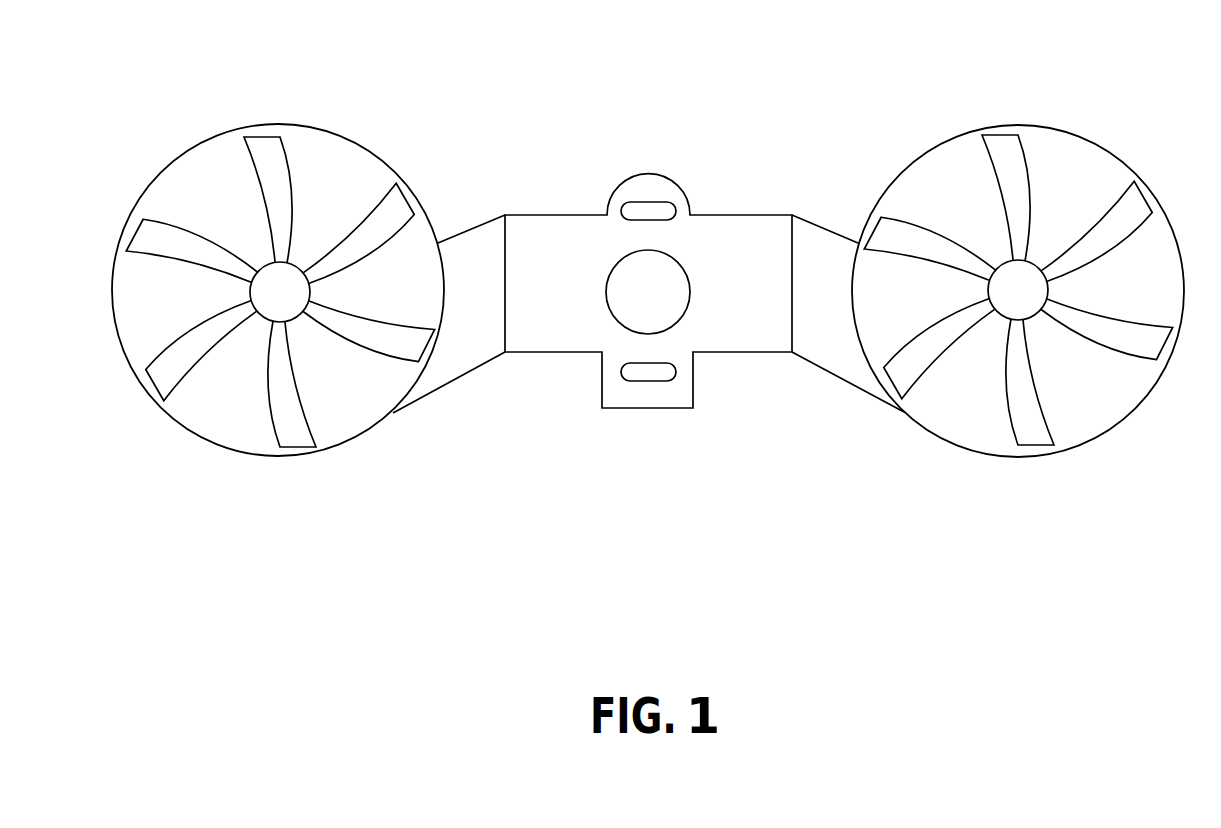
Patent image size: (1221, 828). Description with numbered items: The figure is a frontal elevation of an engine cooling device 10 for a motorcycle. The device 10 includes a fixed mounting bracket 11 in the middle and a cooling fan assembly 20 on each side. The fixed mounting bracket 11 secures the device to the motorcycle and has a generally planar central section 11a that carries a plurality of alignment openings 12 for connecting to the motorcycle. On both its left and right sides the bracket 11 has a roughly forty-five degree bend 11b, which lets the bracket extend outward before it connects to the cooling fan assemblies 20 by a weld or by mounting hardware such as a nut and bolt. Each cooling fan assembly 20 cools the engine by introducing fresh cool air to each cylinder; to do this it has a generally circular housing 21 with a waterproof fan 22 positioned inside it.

The engine cooling device 10 is at (683, 62).
The fixed mounting bracket 11 is at (650, 145).
The central section 11a is at (749, 279).
The bend 11b is at (494, 307).
The alignment openings 12 is at (661, 302).
The cooling fan assembly 20 is at (392, 433).
The housing 21 is at (215, 138).
The waterproof fan 22 is at (288, 283).